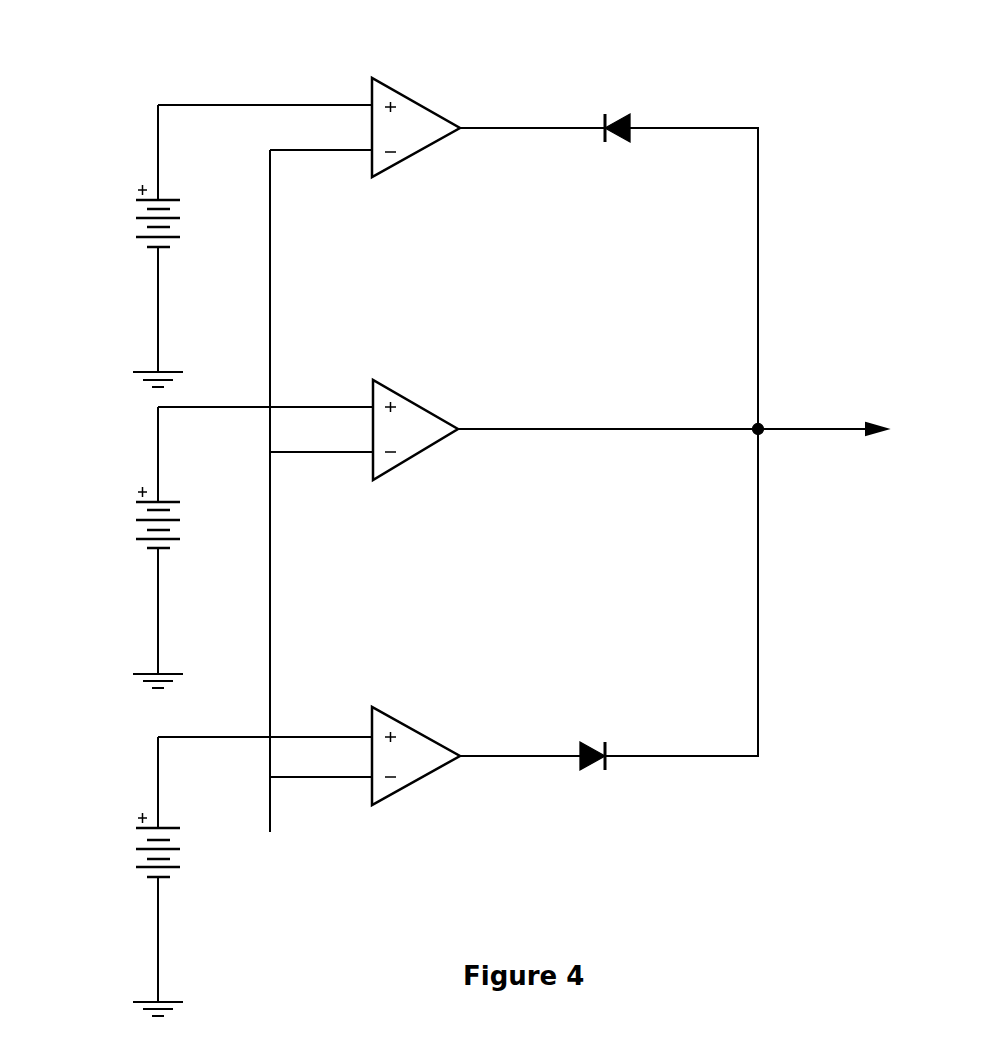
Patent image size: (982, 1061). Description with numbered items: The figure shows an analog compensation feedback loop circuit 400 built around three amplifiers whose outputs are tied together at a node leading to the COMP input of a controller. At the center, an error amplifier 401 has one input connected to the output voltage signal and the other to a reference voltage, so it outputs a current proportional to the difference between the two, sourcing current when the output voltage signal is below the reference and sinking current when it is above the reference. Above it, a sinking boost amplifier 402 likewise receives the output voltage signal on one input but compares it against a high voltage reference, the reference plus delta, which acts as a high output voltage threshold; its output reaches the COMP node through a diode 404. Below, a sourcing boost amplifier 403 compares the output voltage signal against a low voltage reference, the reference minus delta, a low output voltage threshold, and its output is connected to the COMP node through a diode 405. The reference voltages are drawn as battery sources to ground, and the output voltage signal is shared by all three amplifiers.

The analog compensation feedback loop circuit 400 is at (356, 915).
The error amplifier 401 is at (432, 456).
The sinking boost amplifier 402 is at (413, 170).
The sourcing boost amplifier 403 is at (416, 793).
The diode 404 is at (611, 141).
The diode 405 is at (587, 768).